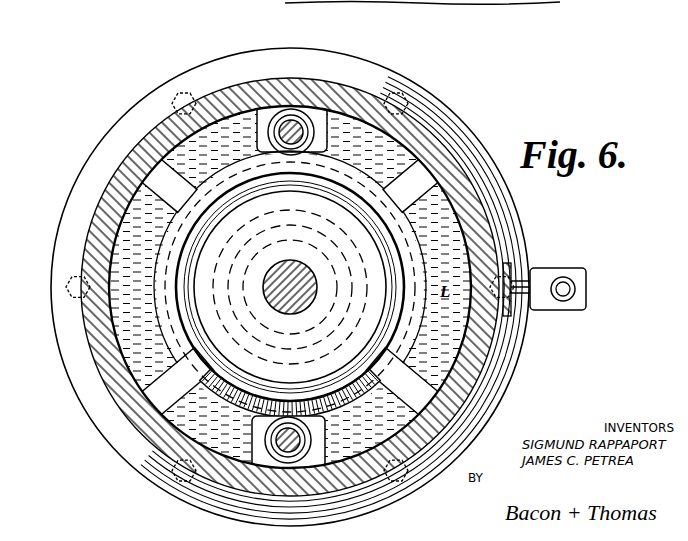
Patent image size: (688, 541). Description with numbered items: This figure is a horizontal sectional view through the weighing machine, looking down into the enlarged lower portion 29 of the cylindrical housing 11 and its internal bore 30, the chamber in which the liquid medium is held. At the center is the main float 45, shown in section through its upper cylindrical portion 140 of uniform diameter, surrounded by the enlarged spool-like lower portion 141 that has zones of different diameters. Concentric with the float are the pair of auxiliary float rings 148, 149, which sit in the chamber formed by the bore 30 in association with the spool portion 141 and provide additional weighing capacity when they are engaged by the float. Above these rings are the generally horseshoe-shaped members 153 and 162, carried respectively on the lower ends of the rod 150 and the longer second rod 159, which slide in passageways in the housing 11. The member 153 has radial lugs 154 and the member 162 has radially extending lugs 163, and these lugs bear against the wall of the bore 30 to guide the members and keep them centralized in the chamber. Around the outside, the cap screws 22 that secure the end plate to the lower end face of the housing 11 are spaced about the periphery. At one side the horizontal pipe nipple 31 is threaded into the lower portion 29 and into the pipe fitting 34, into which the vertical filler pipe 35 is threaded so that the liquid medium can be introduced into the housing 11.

The housing 11 is at (120, 417).
The cap screws 22 is at (188, 92).
The lower portion 29 is at (102, 182).
The internal bore 30 is at (92, 238).
The pipe nipple 31 is at (525, 308).
The pipe fitting 34 is at (586, 275).
The filler pipe 35 is at (576, 292).
The main float 45 is at (314, 258).
The upper cylindrical portion 140 is at (281, 313).
The spool-like lower portion 141 is at (297, 192).
The auxiliary float ring 148 is at (165, 276).
The auxiliary float ring 149 is at (254, 282).
The rod 150 is at (291, 120).
The horseshoe-shaped member 153 is at (223, 161).
The radial lugs 154 is at (161, 373).
The second rod 159 is at (276, 441).
The horseshoe-shaped member 162 is at (348, 413).
The radially extending lugs 163 is at (412, 179).